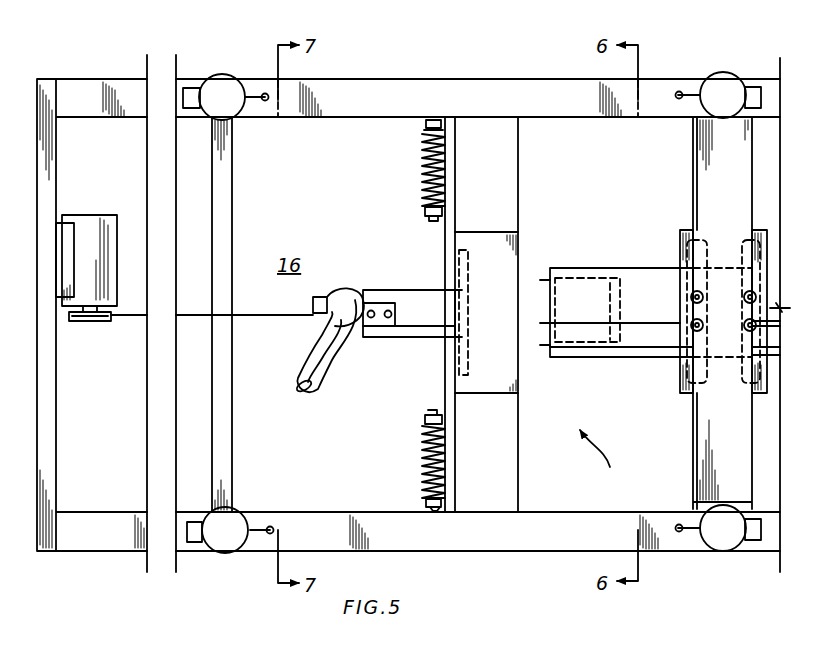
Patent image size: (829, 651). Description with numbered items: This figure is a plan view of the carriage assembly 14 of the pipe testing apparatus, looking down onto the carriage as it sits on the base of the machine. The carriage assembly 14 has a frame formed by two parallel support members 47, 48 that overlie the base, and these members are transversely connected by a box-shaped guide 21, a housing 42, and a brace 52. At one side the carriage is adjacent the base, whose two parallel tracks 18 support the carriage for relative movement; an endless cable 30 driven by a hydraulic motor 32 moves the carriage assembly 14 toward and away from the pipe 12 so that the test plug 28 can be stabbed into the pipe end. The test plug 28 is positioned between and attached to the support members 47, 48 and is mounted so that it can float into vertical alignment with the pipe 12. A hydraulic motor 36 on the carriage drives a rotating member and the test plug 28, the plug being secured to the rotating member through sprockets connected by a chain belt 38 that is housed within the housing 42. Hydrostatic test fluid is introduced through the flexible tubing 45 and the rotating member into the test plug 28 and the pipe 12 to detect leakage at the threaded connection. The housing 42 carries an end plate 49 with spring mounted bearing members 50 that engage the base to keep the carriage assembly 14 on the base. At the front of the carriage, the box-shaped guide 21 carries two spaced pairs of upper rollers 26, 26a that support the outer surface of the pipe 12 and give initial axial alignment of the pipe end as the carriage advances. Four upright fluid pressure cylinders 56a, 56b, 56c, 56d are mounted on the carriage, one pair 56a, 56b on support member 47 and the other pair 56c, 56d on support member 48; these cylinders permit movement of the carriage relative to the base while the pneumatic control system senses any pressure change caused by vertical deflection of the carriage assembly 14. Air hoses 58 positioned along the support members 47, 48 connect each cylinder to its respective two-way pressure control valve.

The pipe 12 is at (655, 268).
The carriage assembly 14 is at (600, 460).
The parallel tracks 18 is at (84, 97).
The box-shaped guide 21 is at (710, 403).
The upper rollers 26 is at (688, 300).
The upper rollers 26a is at (744, 300).
The test plug 28 is at (584, 281).
The cable 30 is at (127, 323).
The hydraulic motor 32 is at (100, 222).
The hydraulic motor 36 is at (410, 304).
The chain belt 38 is at (462, 349).
The housing 42 is at (503, 192).
The flexible tubing 45 is at (316, 340).
The support member 47 is at (509, 535).
The support member 48 is at (482, 96).
The end plate 49 is at (445, 392).
The spring mounted bearing members 50 is at (430, 121).
The brace 52 is at (232, 233).
The fluid pressure cylinder 56a is at (234, 553).
The fluid pressure cylinder 56b is at (729, 552).
The fluid pressure cylinder 56c is at (227, 88).
The fluid pressure cylinder 56d is at (732, 78).
The air hoses 58 is at (258, 105).